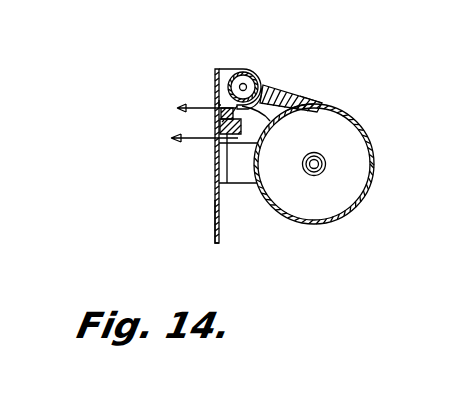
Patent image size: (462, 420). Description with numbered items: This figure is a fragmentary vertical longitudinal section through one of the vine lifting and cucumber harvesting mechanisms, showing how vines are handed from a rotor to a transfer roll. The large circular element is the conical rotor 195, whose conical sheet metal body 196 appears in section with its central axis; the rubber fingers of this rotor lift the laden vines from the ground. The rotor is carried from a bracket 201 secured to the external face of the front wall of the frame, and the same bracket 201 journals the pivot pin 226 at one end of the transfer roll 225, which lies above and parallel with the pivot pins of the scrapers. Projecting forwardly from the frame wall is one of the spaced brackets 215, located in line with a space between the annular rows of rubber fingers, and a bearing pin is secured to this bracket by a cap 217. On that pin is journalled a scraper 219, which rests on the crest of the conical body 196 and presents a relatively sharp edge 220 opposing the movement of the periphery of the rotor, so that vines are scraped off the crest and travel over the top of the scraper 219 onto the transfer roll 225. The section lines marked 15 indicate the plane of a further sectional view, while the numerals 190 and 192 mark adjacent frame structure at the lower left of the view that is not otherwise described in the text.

The sight line 15 is at (188, 123).
The frame plate 190 is at (219, 244).
The plate edge 192 is at (205, 253).
The conical rotor 195 is at (328, 229).
The conical sheet metal body 196 is at (374, 160).
The bracket 201 is at (231, 69).
The bracket 215 is at (238, 127).
The cap 217 is at (221, 104).
The scraper 219 is at (318, 92).
The sharp edge 220 is at (322, 105).
The transfer roll 225 is at (245, 86).
The pivot pin 226 is at (278, 100).